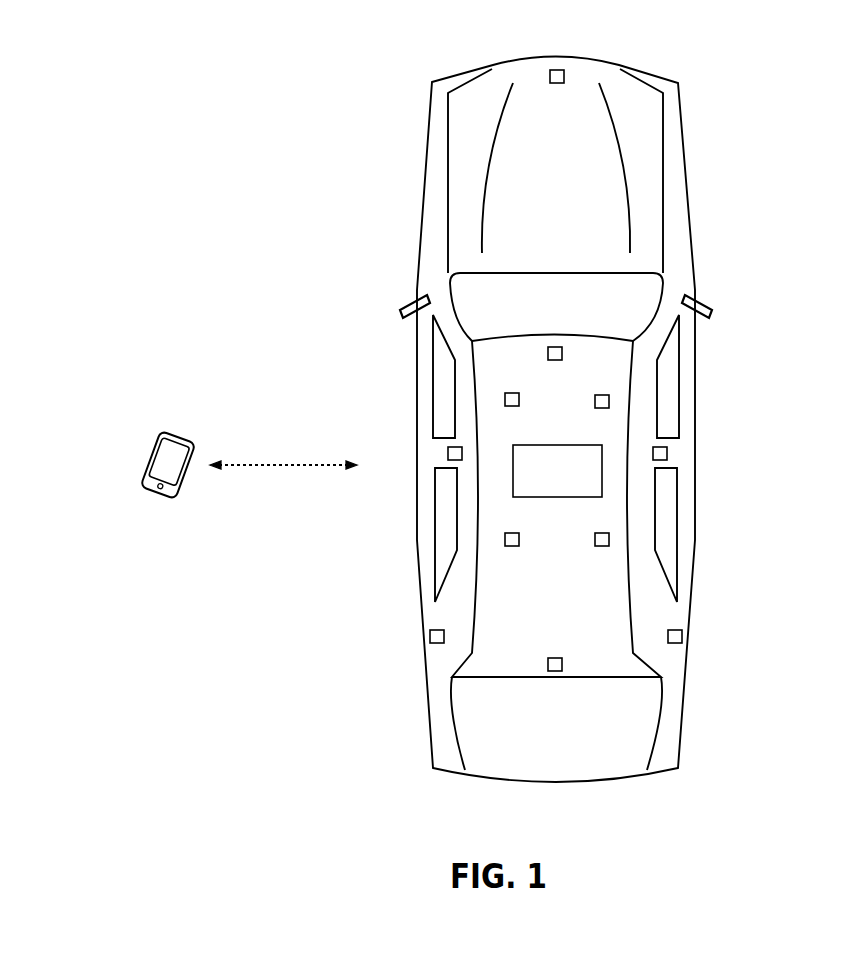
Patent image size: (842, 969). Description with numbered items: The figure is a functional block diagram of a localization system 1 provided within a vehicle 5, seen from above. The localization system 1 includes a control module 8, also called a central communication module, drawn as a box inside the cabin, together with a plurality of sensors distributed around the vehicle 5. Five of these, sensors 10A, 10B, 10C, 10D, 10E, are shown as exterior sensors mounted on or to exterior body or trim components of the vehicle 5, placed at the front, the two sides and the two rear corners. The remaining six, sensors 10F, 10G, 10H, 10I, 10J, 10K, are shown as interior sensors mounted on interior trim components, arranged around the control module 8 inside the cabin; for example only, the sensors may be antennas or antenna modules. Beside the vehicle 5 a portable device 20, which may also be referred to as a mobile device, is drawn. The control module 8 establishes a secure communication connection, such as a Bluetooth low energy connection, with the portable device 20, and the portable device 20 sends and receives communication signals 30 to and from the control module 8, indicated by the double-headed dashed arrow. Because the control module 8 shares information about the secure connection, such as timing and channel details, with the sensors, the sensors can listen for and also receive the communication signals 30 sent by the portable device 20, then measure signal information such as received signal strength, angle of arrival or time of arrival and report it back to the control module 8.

The localization system 1 is at (362, 253).
The vehicle 5 is at (578, 56).
The control module 8 is at (533, 444).
The sensor 10A is at (559, 69).
The sensor 10B is at (667, 453).
The sensor 10C is at (682, 637).
The sensor 10D is at (430, 638).
The sensor 10E is at (448, 452).
The sensor 10F is at (549, 347).
The sensor 10G is at (610, 400).
The sensor 10H is at (609, 540).
The sensor 10I is at (560, 658).
The sensor 10J is at (504, 540).
The sensor 10K is at (504, 400).
The portable device 20 is at (148, 460).
The communication signals 30 is at (263, 464).